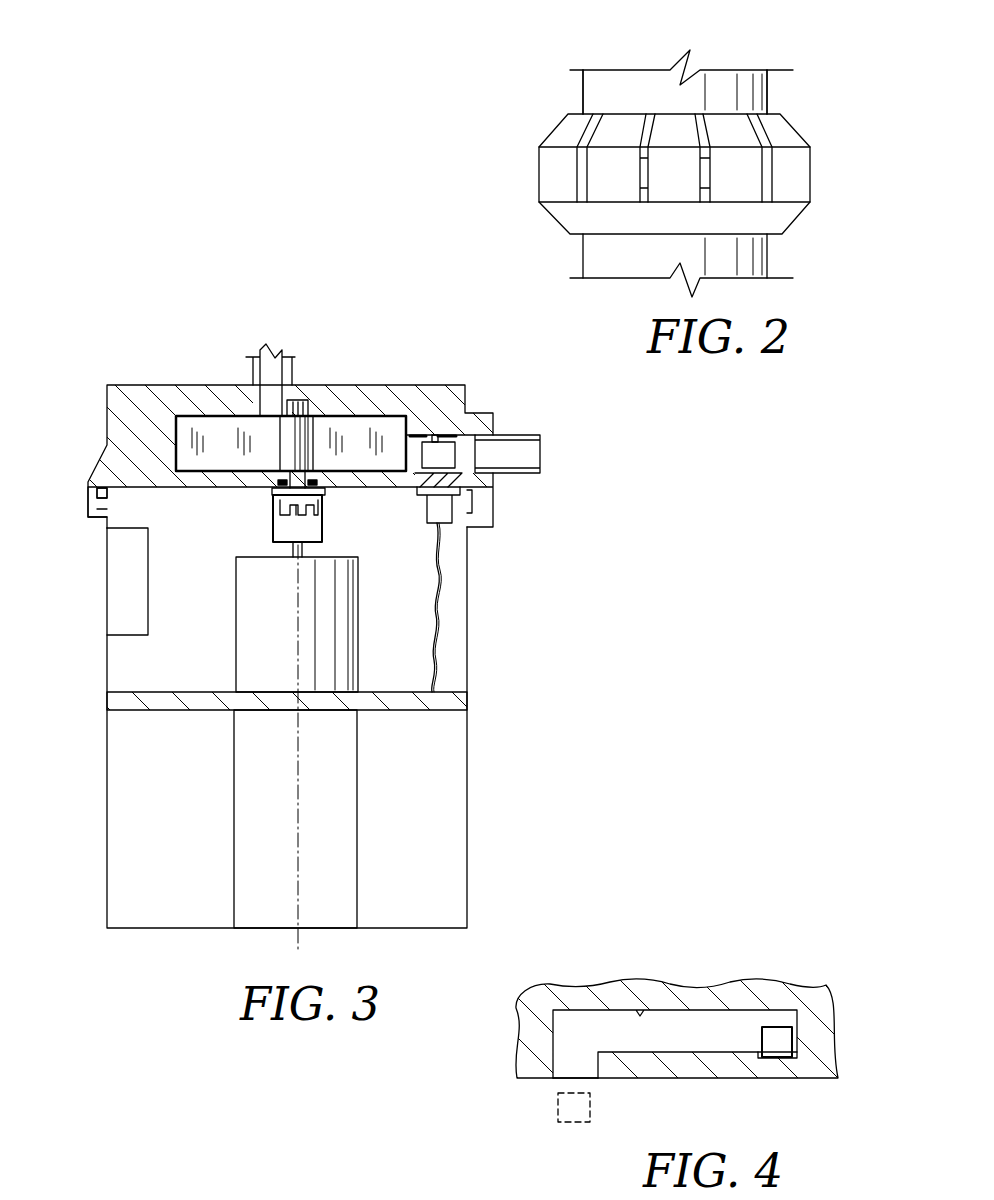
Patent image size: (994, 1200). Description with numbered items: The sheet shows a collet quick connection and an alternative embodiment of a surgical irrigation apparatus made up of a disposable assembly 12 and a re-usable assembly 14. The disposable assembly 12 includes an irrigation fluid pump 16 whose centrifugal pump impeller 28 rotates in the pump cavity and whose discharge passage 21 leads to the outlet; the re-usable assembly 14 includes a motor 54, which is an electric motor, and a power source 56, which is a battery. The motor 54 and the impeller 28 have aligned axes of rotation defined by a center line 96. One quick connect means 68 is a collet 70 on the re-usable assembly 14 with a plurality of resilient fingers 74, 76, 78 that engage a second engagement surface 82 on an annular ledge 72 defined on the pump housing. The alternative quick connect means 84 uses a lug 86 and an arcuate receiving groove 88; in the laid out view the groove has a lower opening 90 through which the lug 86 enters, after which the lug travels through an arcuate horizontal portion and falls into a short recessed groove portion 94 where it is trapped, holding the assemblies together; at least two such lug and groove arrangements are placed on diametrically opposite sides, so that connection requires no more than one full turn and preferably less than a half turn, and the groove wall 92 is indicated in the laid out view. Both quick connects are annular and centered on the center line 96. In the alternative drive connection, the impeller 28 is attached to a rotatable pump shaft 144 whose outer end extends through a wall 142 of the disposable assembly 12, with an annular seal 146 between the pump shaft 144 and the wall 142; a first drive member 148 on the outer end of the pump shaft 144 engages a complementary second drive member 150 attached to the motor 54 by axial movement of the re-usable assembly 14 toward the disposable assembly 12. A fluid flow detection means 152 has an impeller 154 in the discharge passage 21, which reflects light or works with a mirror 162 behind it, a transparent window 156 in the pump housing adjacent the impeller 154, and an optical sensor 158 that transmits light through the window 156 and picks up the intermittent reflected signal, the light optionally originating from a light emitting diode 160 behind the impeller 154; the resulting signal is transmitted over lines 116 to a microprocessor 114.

In FIG. 2, the disposable assembly 12 is at (726, 85).
In FIG. 3, the disposable assembly 12 is at (310, 426).
In FIG. 2, the re-usable assembly 14 is at (758, 260).
In FIG. 3, the re-usable assembly 14 is at (468, 640).
In FIG. 2, the irrigation fluid pump 16 is at (757, 92).
In FIG. 3, the irrigation fluid pump 16 is at (435, 392).
In FIG. 3, the discharge passage 21 is at (468, 470).
In FIG. 3, the centrifugal pump impeller 28 is at (348, 425).
In FIG. 3, the motor 54 is at (278, 653).
In FIG. 3, the power source 56 is at (281, 813).
In FIG. 2, the quick connect means 68 is at (714, 162).
In FIG. 2, the collet 70 is at (714, 162).
In FIG. 2, the annular ledge 72 is at (802, 167).
In FIG. 2, the resilient finger 74 is at (725, 125).
In FIG. 2, the resilient finger 76 is at (680, 125).
In FIG. 2, the resilient finger 78 is at (620, 125).
In FIG. 2, the second engagement surface 82 is at (640, 152).
In FIG. 4, the quick connect means 84 is at (677, 1008).
In FIG. 3, the lug 86 is at (97, 502).
In FIG. 4, the lug 86 is at (773, 1032).
In FIG. 3, the receiving groove 88 is at (108, 497).
In FIG. 4, the receiving groove 88 is at (677, 1008).
In FIG. 4, the lower opening 90 is at (558, 1078).
In FIG. 4, the groove wall 92 is at (642, 1012).
In FIG. 4, the recessed groove portion 94 is at (790, 1052).
In FIG. 3, the center line 96 is at (297, 942).
In FIG. 3, the microprocessor 114 is at (392, 703).
In FIG. 3, the lines 116 is at (437, 668).
In FIG. 3, the wall 142 is at (250, 478).
In FIG. 3, the pump shaft 144 is at (298, 407).
In FIG. 3, the annular seal 146 is at (330, 483).
In FIG. 3, the first drive member 148 is at (258, 522).
In FIG. 3, the second drive member 150 is at (280, 502).
In FIG. 3, the fluid flow detection means 152 is at (507, 416).
In FIG. 3, the impeller 154 is at (455, 437).
In FIG. 3, the transparent window 156 is at (455, 480).
In FIG. 3, the sensor 158 is at (432, 510).
In FIG. 3, the light emitting diode 160 is at (448, 445).
In FIG. 3, the mirror 162 is at (427, 432).